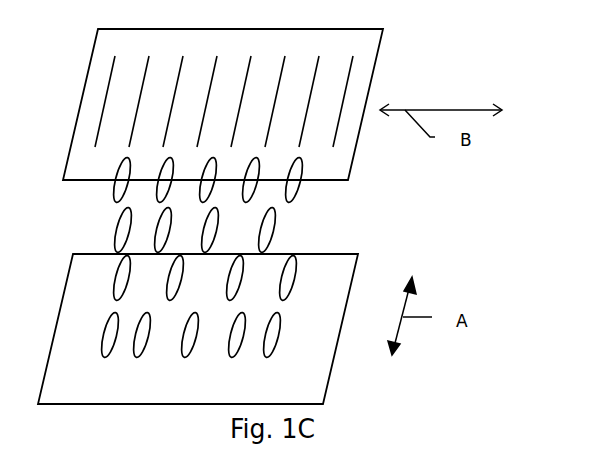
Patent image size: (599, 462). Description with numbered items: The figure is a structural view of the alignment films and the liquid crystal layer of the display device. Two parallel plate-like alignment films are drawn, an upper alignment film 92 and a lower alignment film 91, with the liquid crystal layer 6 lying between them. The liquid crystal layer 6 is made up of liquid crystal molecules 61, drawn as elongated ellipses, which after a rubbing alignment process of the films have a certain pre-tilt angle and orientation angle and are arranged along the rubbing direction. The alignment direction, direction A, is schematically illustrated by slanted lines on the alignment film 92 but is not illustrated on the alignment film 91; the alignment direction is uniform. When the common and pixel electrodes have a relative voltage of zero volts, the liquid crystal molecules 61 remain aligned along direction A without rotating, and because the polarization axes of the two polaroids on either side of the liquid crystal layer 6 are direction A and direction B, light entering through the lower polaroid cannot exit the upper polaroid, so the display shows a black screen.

The alignment film 92 is at (367, 45).
The alignment film 91 is at (317, 386).
The liquid crystal layer 6 is at (273, 226).
The liquid crystal molecules 61 is at (191, 352).